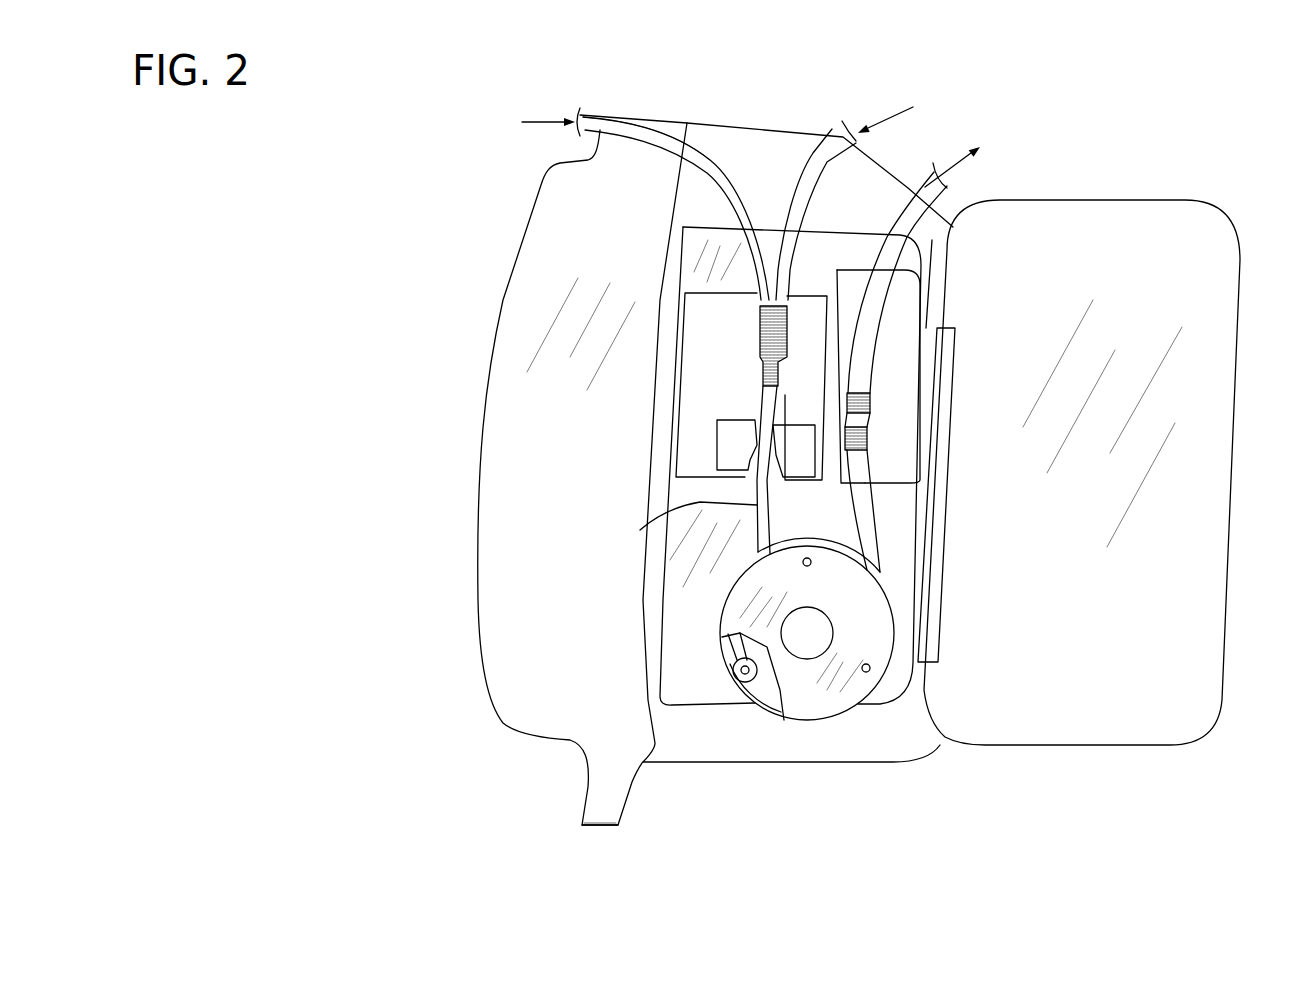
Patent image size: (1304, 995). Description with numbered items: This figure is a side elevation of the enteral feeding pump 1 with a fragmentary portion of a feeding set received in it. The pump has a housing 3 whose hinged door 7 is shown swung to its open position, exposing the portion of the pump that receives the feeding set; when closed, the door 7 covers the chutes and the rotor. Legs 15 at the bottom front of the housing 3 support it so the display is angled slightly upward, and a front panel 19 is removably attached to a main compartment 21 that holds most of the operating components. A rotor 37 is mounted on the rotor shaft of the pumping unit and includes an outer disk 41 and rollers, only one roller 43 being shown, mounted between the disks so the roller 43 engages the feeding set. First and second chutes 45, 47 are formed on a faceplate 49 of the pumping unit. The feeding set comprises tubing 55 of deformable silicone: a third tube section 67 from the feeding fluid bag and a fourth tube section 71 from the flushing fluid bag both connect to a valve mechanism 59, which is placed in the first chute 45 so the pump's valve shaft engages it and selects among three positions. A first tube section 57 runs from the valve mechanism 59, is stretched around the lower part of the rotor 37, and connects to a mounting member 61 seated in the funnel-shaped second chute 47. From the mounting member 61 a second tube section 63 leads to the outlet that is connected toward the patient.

The enteral feeding pump 1 is at (1203, 128).
The housing 3 is at (757, 100).
The hinged door 7 is at (1213, 287).
The legs 15 is at (595, 813).
The front panel 19 is at (608, 838).
The main compartment 21 is at (903, 776).
The rotor 37 is at (776, 739).
The outer disk 41 is at (817, 710).
The roller 43 is at (745, 665).
The first chute 45 is at (740, 295).
The second chute 47 is at (912, 283).
The faceplate 49 is at (893, 542).
The tubing 55 is at (701, 185).
The first tube section 57 is at (718, 502).
The valve mechanism 59 is at (760, 340).
The mounting member 61 is at (870, 420).
The second tube section 63 is at (920, 190).
The third tube section 67 is at (633, 130).
The fourth tube section 71 is at (828, 148).